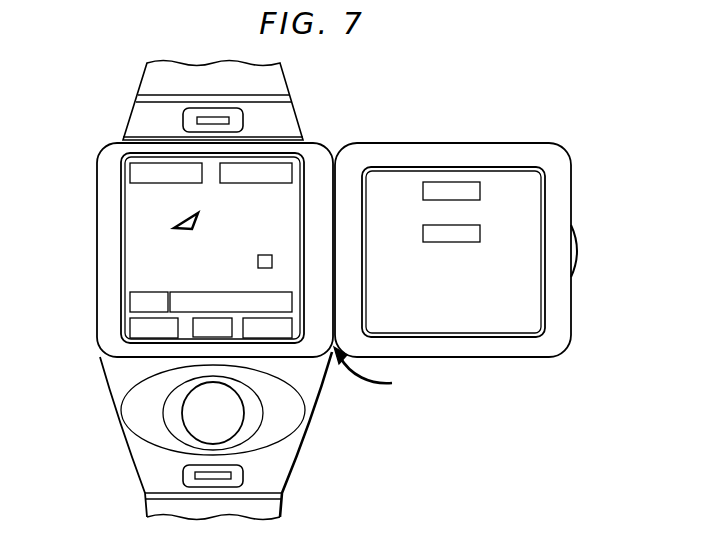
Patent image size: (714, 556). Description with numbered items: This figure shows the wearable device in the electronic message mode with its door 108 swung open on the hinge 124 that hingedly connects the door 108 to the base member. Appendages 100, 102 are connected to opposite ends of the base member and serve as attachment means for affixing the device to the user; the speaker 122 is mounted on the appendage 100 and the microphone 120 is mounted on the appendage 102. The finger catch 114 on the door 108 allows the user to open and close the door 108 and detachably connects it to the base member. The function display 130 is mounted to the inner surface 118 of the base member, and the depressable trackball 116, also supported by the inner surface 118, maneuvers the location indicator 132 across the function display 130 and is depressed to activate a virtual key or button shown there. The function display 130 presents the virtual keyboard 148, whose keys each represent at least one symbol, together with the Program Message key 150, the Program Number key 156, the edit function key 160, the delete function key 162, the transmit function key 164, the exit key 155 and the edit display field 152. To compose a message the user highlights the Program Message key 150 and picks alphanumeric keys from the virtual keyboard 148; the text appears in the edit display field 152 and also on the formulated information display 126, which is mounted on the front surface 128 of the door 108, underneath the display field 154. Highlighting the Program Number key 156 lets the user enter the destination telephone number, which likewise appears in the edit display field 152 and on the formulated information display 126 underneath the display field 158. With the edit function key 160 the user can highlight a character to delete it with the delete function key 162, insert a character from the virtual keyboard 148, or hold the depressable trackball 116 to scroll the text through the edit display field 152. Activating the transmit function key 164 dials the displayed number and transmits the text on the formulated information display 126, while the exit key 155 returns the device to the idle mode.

The appendage 100 is at (283, 86).
The appendage 102 is at (281, 497).
The door 108 is at (496, 143).
The finger catch 114 is at (578, 249).
The depressable trackball 116 is at (237, 427).
The inner surface 118 is at (118, 375).
The microphone 120 is at (183, 476).
The speaker 122 is at (183, 120).
The hinge 124 is at (378, 371).
The formulated information display 126 is at (562, 158).
The front surface 128 is at (418, 158).
The function display 130 is at (120, 222).
The location indicator 132 is at (190, 216).
The virtual keyboard 148 is at (135, 206).
The Program Message key 150 is at (323, 148).
The edit display field 152 is at (185, 292).
The display field 154 is at (480, 234).
The exit key 155 is at (280, 338).
The Program Number key 156 is at (130, 172).
The display field 158 is at (480, 190).
The edit function key 160 is at (130, 303).
The delete function key 162 is at (130, 330).
The transmit function key 164 is at (222, 338).